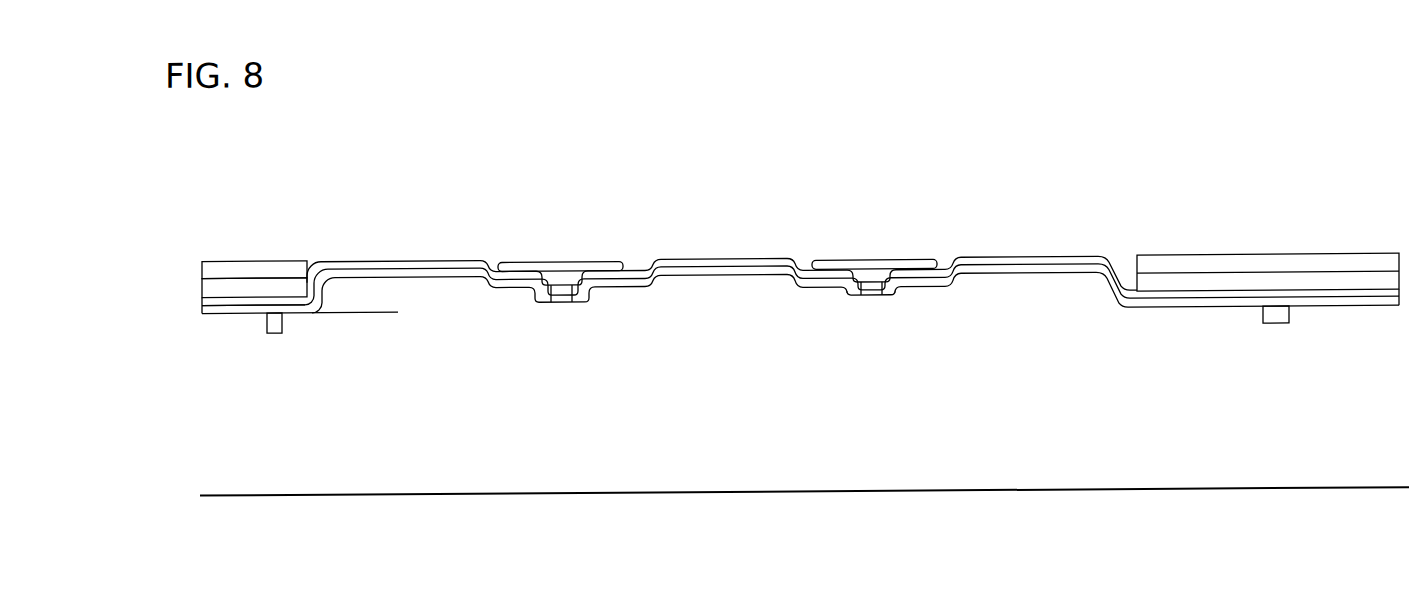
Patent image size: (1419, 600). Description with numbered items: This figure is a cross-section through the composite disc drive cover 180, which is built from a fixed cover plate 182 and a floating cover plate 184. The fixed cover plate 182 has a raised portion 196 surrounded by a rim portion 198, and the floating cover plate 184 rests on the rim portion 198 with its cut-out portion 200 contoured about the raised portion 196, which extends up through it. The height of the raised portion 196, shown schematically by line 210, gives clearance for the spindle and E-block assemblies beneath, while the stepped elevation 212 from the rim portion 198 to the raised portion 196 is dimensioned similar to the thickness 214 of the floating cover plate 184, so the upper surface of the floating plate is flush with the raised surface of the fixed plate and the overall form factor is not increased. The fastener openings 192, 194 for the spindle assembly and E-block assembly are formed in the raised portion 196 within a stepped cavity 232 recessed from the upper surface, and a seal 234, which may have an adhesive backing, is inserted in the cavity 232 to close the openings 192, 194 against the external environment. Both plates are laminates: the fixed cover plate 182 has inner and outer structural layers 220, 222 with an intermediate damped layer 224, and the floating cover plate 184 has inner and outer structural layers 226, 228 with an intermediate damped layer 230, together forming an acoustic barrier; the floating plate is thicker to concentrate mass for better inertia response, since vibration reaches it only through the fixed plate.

The cover 180 is at (1019, 228).
The cover plate 182 is at (627, 224).
The cover plate 184 is at (1194, 256).
The fastener opening 192 is at (570, 272).
The fastener opening 194 is at (879, 274).
The raised portion 196 is at (1069, 248).
The rim portion 198 is at (1222, 316).
The cut-out portion 200 is at (1130, 273).
The height of the raised portion 210 is at (418, 281).
The stepped elevation 212 is at (377, 383).
The thickness of cover plate 214 is at (161, 359).
The inner structural layer 220 is at (245, 315).
The outer structural layer 222 is at (205, 303).
The intermediate damped layer 224 is at (223, 309).
The inner structural layer 226 is at (220, 289).
The outer structural layer 228 is at (290, 274).
The intermediate damped layer 230 is at (310, 269).
The stepped cavity 232 is at (625, 270).
The seal 234 is at (600, 264).